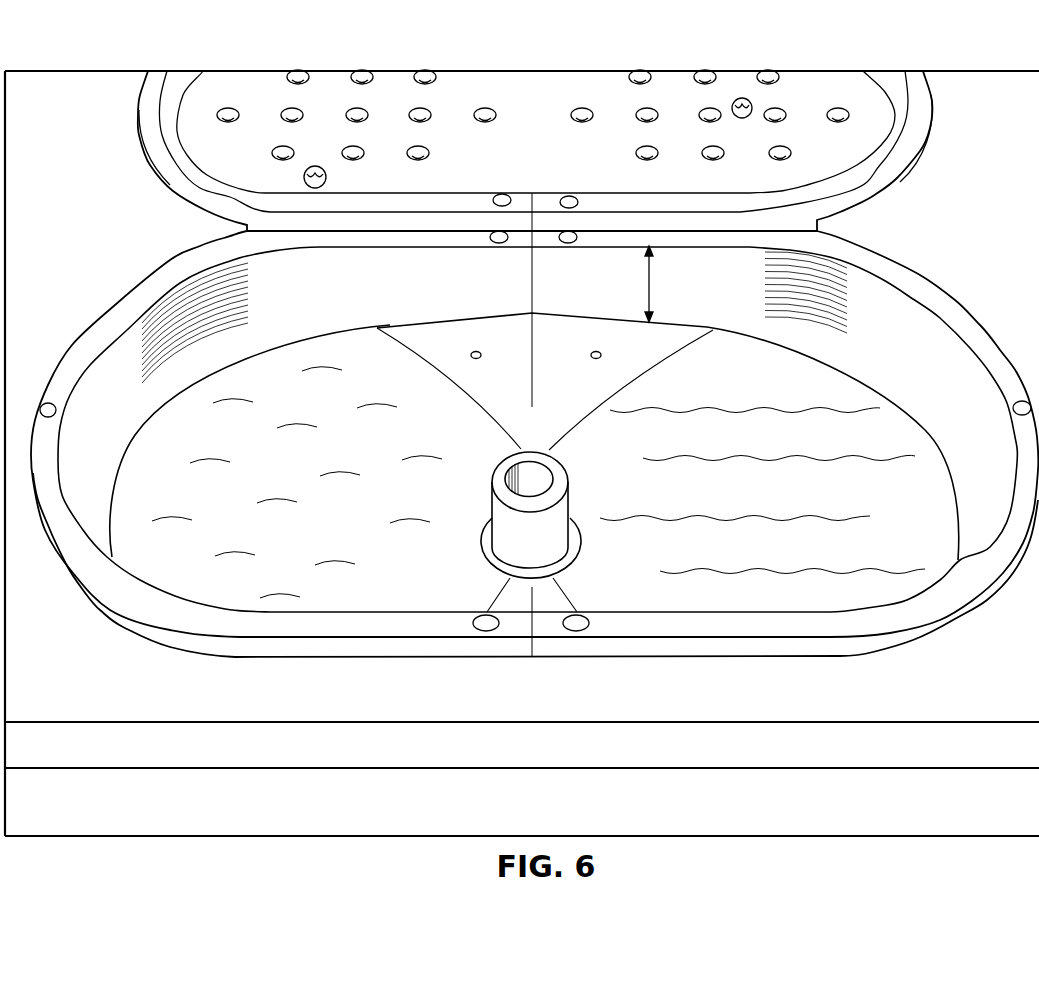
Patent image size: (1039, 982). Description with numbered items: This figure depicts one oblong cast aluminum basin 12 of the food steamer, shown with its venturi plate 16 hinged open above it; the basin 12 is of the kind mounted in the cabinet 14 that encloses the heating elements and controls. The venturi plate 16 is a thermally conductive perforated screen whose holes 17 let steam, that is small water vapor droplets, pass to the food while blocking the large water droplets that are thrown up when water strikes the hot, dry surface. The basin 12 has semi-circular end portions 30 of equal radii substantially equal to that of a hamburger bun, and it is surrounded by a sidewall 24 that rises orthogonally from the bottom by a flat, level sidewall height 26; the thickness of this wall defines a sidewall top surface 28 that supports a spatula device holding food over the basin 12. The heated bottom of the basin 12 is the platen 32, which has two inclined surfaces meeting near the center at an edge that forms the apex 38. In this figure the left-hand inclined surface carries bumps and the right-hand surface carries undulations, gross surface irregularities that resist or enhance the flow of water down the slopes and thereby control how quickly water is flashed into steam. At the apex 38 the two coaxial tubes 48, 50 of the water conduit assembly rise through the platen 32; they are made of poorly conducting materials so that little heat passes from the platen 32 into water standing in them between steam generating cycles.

The basin 12 is at (534, 446).
The cabinet 14 is at (1027, 136).
The venturi plate 16 is at (535, 128).
The holes 17 is at (486, 107).
The sidewall 24 is at (90, 417).
The sidewall height 26 is at (650, 277).
The sidewall top surface 28 is at (116, 304).
The semi-circular end portions 30 is at (233, 645).
The basin platen 32 is at (421, 404).
The apex 38 is at (532, 590).
The coaxial tube 48 is at (490, 550).
The coaxial tube 50 is at (562, 455).